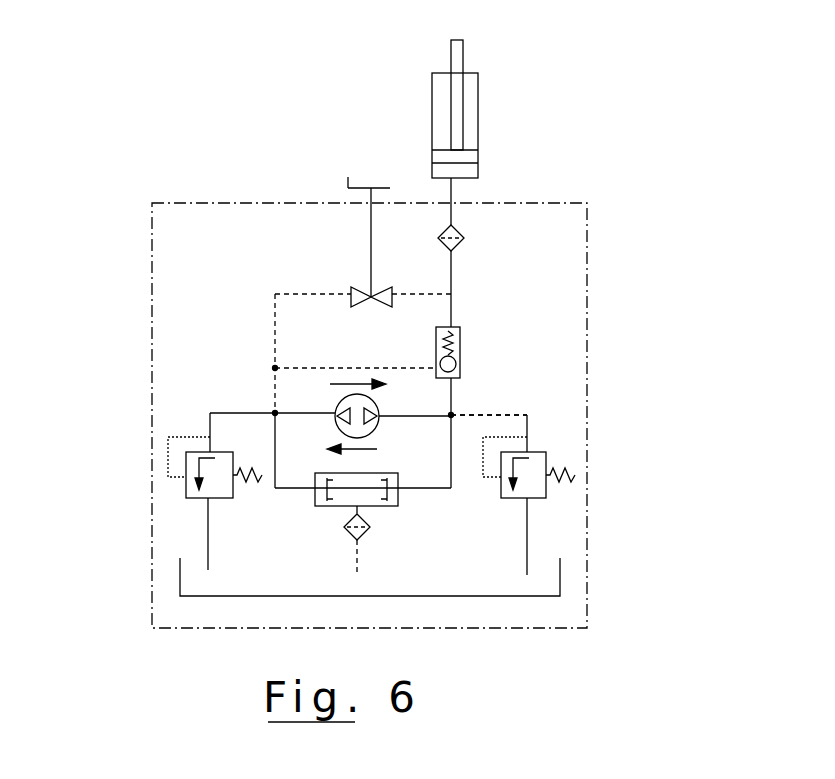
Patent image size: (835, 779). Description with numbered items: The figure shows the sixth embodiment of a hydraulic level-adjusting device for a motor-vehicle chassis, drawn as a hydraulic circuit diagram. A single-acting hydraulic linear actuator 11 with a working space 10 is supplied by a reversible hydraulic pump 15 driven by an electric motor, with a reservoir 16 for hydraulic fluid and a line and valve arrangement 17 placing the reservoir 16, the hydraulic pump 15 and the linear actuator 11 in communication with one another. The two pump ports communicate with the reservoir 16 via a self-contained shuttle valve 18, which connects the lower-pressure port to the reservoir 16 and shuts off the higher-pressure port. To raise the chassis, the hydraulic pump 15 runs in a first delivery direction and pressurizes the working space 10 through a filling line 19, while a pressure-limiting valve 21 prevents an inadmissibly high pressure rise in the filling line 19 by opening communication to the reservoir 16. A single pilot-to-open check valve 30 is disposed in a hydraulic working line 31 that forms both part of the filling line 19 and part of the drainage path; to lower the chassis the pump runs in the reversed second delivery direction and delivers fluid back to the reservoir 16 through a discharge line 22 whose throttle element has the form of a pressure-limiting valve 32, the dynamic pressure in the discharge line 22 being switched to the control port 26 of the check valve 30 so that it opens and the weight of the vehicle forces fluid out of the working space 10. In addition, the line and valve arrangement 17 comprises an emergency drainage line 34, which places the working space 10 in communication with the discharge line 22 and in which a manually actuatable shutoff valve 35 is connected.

The working space 10 is at (473, 173).
The hydraulic linear actuator 11 is at (478, 105).
The hydraulic pump 15 is at (378, 424).
The reservoir 16 is at (180, 596).
The line and valve arrangement 17 is at (493, 293).
The shuttle valve 18 is at (315, 506).
The filling line 19 is at (455, 403).
The pressure-limiting valve 21 is at (546, 498).
The discharge line 22 is at (210, 413).
The control port 26 is at (433, 370).
The pilot-to-open check valve 30 is at (460, 350).
The hydraulic working line 31 is at (460, 392).
The pressure-limiting valve 32 is at (186, 498).
The emergency drainage line 34 is at (338, 292).
The manually actuatable shutoff valve 35 is at (358, 273).